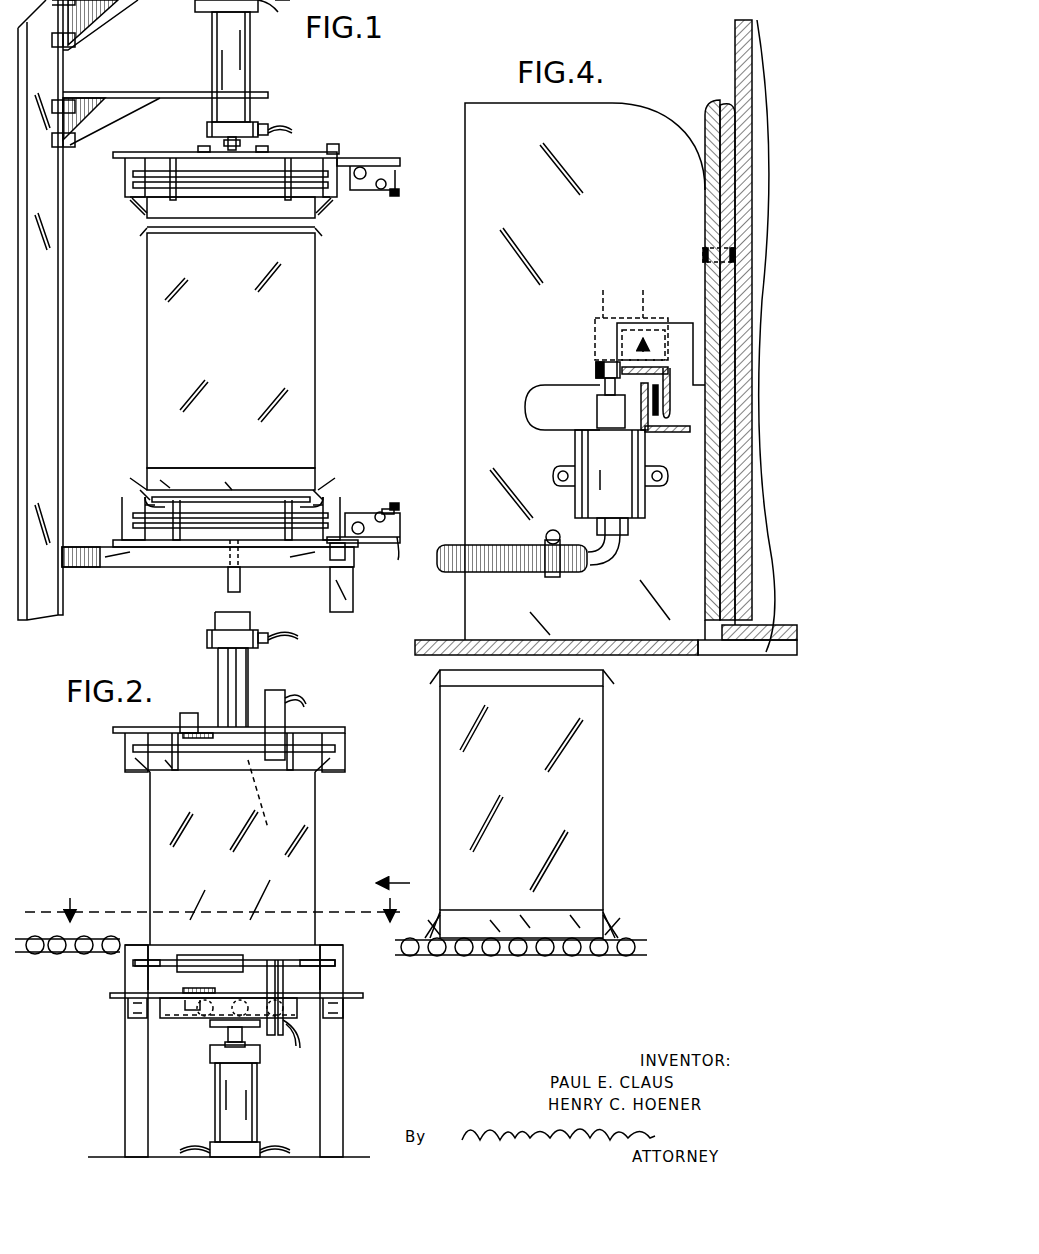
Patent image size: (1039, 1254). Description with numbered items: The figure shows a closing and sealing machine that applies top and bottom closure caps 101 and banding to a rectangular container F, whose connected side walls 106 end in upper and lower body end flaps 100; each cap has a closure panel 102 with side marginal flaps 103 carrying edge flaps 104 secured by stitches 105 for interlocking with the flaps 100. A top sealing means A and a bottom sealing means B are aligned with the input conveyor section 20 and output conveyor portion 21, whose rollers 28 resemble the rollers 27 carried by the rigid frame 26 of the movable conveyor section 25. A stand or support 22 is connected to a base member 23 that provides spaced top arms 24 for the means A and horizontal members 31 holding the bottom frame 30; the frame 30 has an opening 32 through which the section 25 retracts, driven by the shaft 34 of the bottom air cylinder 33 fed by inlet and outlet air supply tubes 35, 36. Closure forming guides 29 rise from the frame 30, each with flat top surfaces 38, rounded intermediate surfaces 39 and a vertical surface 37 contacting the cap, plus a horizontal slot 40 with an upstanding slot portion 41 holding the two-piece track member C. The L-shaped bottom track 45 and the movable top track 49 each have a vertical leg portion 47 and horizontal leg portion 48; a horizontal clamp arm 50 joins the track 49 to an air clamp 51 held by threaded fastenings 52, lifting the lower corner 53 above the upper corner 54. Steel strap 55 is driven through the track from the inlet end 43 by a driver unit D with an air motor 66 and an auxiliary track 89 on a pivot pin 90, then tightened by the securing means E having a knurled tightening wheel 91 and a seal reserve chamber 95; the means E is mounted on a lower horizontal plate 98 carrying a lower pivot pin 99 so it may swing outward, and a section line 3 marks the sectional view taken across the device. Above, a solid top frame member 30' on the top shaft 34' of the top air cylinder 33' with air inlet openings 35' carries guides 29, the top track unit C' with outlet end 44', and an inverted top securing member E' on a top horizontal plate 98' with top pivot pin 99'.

In FIG. 2, the input conveyor section 20 is at (437, 956).
In FIG. 2, the output conveyor portion 21 is at (50, 958).
In FIG. 1, the stand or support 22 is at (63, 402).
In FIG. 2, the stand or support 22 is at (250, 692).
In FIG. 1, the base member 23 is at (352, 603).
In FIG. 2, the base member 23 is at (125, 1081).
In FIG. 1, the top arms 24 is at (162, 0).
In FIG. 1, the movable conveyor section 25 is at (323, 498).
In FIG. 2, the movable conveyor section 25 is at (300, 1012).
In FIG. 1, the rigid frame 26 is at (148, 502).
In FIG. 2, the rigid frame 26 is at (160, 1016).
In FIG. 1, the rollers 27 is at (238, 498).
In FIG. 2, the rollers 27 is at (160, 1006).
In FIG. 2, the rollers 28 is at (108, 945).
In FIG. 1, the closure forming guides 29 is at (125, 172).
In FIG. 4, the closure forming guides 29 is at (478, 297).
In FIG. 2, the closure forming guides 29 is at (163, 735).
In FIG. 1, the bottom frame 30 is at (221, 530).
In FIG. 4, the bottom frame 30 is at (606, 663).
In FIG. 2, the bottom frame 30 is at (219, 991).
In FIG. 1, the top frame member 30' is at (225, 141).
In FIG. 2, the top frame member 30' is at (210, 726).
In FIG. 1, the horizontal members 31 is at (86, 562).
In FIG. 2, the horizontal members 31 is at (348, 1000).
In FIG. 4, the opening 32 is at (740, 656).
In FIG. 2, the opening 32 is at (365, 1012).
In FIG. 1, the bottom air cylinder 33 is at (243, 68).
In FIG. 2, the bottom air cylinder 33 is at (217, 1110).
In FIG. 2, the top air cylinder 33' is at (216, 837).
In FIG. 1, the shaft 34 is at (211, 566).
In FIG. 2, the shaft 34 is at (211, 1042).
In FIG. 1, the top shaft 34' is at (211, 135).
In FIG. 2, the top shaft 34' is at (255, 687).
In FIG. 4, the inlet air supply tube 35 is at (528, 564).
In FIG. 2, the inlet air supply tube 35 is at (286, 1086).
In FIG. 1, the air inlet openings 35' is at (280, 112).
In FIG. 2, the air inlet openings 35' is at (293, 634).
In FIG. 2, the outlet air supply tube 36 is at (196, 1150).
In FIG. 4, the vertical surfaces 37 is at (705, 286).
In FIG. 4, the flat horizontal top surfaces 38 is at (534, 103).
In FIG. 4, the rounded intermediate surfaces 39 is at (666, 118).
In FIG. 4, the horizontal slot 40 is at (557, 386).
In FIG. 4, the vertical slot portion 41 is at (676, 323).
In FIG. 2, the inlet end 43 is at (165, 765).
In FIG. 2, the outlet end 44' is at (285, 748).
In FIG. 1, the L-shaped bottom track 45 is at (205, 528).
In FIG. 4, the L-shaped bottom track 45 is at (661, 433).
In FIG. 4, the vertical leg portion 47 is at (641, 410).
In FIG. 4, the horizontal leg portion 48 is at (640, 436).
In FIG. 1, the top track 49 is at (388, 510).
In FIG. 4, the top track 49 is at (600, 334).
In FIG. 2, the top track 49 is at (380, 952).
In FIG. 4, the horizontal clamp arm 50 is at (598, 368).
In FIG. 4, the air clamp 51 is at (630, 515).
In FIG. 4, the threaded fastenings 52 is at (553, 473).
In FIG. 4, the lower corner 53 is at (672, 415).
In FIG. 4, the upper corner 54 is at (611, 411).
In FIG. 4, the steel strap 55 is at (670, 392).
In FIG. 2, the air motor 66 is at (272, 1036).
In FIG. 2, the auxiliary track 89 is at (193, 766).
In FIG. 2, the pivot pin 90 is at (228, 782).
In FIG. 1, the knurled tightening wheel 91 is at (372, 168).
In FIG. 1, the reserve chamber 95 is at (378, 196).
In FIG. 1, the valve 98 is at (409, 552).
In FIG. 2, the valve 98 is at (199, 981).
In FIG. 1, the top horizontal plate 98' is at (372, 165).
In FIG. 2, the top horizontal plate 98' is at (202, 789).
In FIG. 1, the valve 99 is at (357, 555).
In FIG. 2, the valve 99 is at (178, 1039).
In FIG. 1, the top pivot pin 99' is at (352, 140).
In FIG. 2, the top pivot pin 99' is at (196, 705).
In FIG. 1, the body end flaps 100 is at (142, 237).
In FIG. 4, the body end flaps 100 is at (738, 42).
In FIG. 2, the body end flaps 100 is at (432, 682).
In FIG. 1, the closure caps 101 is at (335, 493).
In FIG. 2, the closure caps 101 is at (163, 766).
In FIG. 4, the closure panel 102 is at (776, 625).
In FIG. 1, the side marginal flaps 103 is at (140, 206).
In FIG. 4, the side marginal flaps 103 is at (712, 222).
In FIG. 2, the side marginal flaps 103 is at (125, 744).
In FIG. 1, the edge flaps 104 is at (135, 214).
In FIG. 4, the edge flaps 104 is at (728, 198).
In FIG. 2, the edge flaps 104 is at (136, 766).
In FIG. 4, the stitches 105 is at (703, 257).
In FIG. 1, the side walls 106 is at (308, 322).
In FIG. 2, the side walls 106 is at (305, 832).
In FIG. 2, the section line 3 is at (217, 902).
In FIG. 1, the top sealing means A is at (295, 142).
In FIG. 2, the top sealing means A is at (304, 722).
In FIG. 1, the bottom sealing means B is at (168, 528).
In FIG. 2, the bottom sealing means B is at (348, 984).
In FIG. 1, the two-piece track member C is at (230, 550).
In FIG. 4, the two-piece track member C is at (723, 394).
In FIG. 2, the two-piece track member C is at (234, 944).
In FIG. 1, the top track unit C' is at (230, 156).
In FIG. 2, the top track unit C' is at (234, 721).
In FIG. 2, the driver unit D is at (298, 744).
In FIG. 1, the strap tightening and securing means E is at (376, 527).
In FIG. 1, the top strap tightening and securing member E' is at (413, 171).
In FIG. 1, the container F is at (303, 380).
In FIG. 2, the container F is at (155, 855).